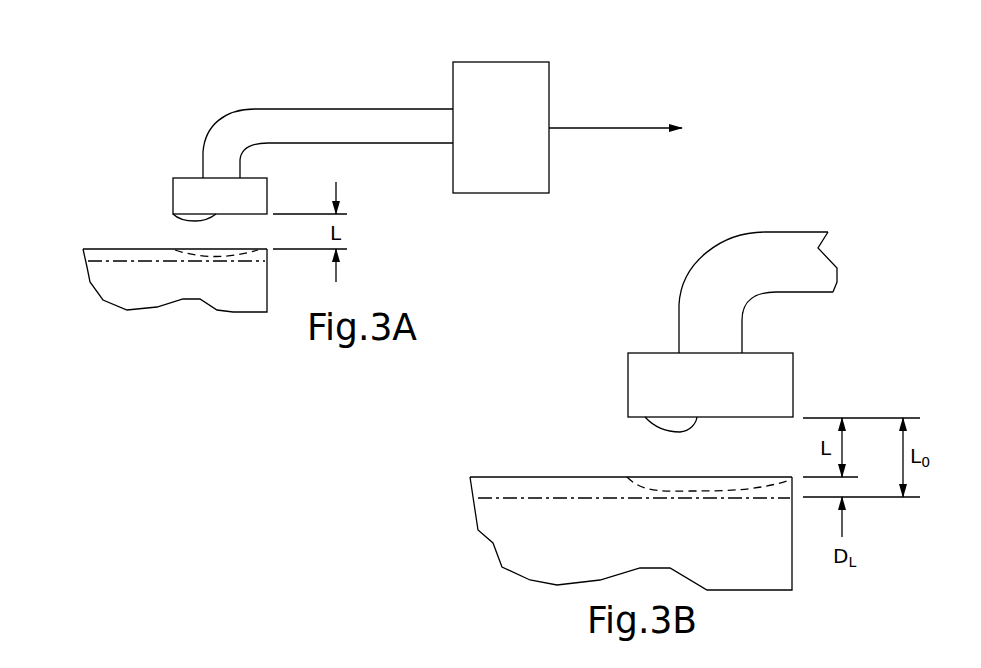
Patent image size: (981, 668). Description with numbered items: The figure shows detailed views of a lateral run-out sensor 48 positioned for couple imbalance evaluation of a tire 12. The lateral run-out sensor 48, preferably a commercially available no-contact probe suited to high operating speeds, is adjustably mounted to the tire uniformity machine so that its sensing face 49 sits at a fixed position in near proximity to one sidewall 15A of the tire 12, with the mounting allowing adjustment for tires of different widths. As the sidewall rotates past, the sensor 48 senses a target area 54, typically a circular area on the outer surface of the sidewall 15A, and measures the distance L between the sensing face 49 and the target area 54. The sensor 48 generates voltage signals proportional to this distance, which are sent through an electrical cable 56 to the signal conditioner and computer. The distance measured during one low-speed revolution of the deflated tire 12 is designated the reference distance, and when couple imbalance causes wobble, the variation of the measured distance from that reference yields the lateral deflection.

In FIG. 3A, the tire 12 is at (107, 316).
In FIG. 3B, the tire 12 is at (528, 587).
In FIG. 3A, the sidewall 15A is at (125, 248).
In FIG. 3B, the sidewall 15A is at (557, 477).
In FIG. 3A, the lateral run-out sensor 48 is at (497, 53).
In FIG. 3B, the lateral run-out sensor 48 is at (677, 280).
In FIG. 3A, the sensing face 49 is at (176, 220).
In FIG. 3B, the sensing face 49 is at (648, 428).
In FIG. 3A, the target area 54 is at (210, 248).
In FIG. 3B, the target area 54 is at (677, 477).
In FIG. 3A, the electrical cable 56 is at (572, 128).